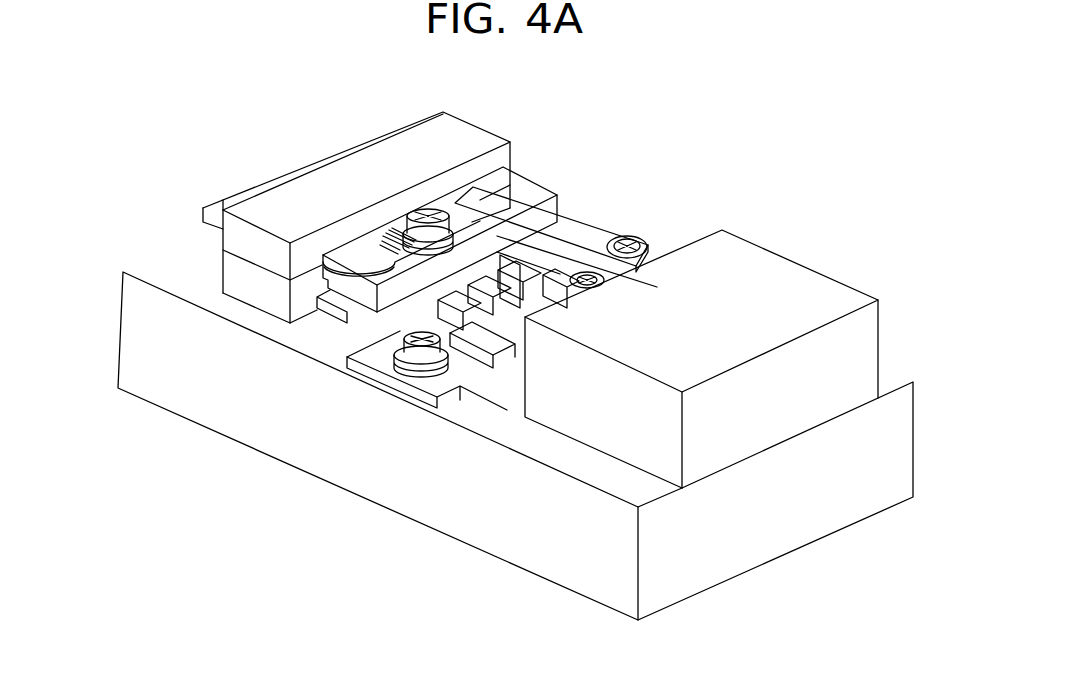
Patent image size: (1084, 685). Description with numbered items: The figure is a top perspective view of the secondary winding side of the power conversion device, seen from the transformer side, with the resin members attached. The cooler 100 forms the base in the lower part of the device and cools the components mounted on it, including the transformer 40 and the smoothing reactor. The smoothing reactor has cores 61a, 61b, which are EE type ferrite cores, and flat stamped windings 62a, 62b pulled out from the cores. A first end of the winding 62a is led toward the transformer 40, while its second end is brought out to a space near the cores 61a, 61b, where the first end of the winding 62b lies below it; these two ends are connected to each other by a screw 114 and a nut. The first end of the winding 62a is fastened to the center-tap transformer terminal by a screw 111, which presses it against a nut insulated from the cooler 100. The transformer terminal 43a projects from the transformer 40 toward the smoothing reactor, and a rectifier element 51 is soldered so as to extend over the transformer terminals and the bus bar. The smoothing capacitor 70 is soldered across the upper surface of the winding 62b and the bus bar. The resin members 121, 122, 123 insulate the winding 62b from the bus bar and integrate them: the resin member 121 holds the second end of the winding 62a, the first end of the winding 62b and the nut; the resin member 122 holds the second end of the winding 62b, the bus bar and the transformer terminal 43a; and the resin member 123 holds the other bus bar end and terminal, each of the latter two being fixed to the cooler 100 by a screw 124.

The cooler 100 is at (573, 557).
The transformer 40 is at (822, 292).
The screw 111 is at (603, 284).
The core 61a is at (237, 239).
The core 61b is at (253, 292).
The winding 62a is at (360, 246).
The winding 62b is at (398, 315).
The screw 114 is at (403, 212).
The resin member 121 is at (352, 293).
The resin member 122 is at (427, 387).
The resin member 123 is at (558, 215).
The screw 124 is at (648, 247).
The rectifier element 51 is at (578, 292).
The smoothing capacitor 70 is at (428, 313).
The transformer terminal 43a is at (517, 383).